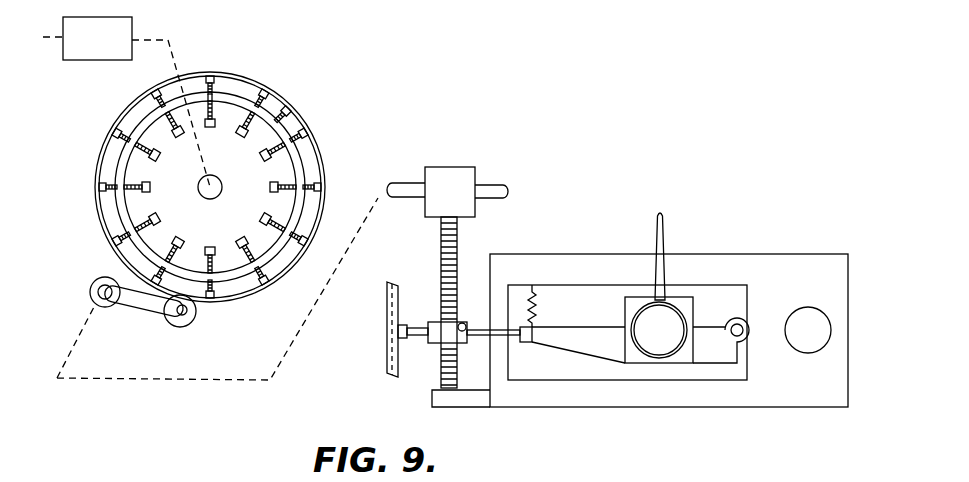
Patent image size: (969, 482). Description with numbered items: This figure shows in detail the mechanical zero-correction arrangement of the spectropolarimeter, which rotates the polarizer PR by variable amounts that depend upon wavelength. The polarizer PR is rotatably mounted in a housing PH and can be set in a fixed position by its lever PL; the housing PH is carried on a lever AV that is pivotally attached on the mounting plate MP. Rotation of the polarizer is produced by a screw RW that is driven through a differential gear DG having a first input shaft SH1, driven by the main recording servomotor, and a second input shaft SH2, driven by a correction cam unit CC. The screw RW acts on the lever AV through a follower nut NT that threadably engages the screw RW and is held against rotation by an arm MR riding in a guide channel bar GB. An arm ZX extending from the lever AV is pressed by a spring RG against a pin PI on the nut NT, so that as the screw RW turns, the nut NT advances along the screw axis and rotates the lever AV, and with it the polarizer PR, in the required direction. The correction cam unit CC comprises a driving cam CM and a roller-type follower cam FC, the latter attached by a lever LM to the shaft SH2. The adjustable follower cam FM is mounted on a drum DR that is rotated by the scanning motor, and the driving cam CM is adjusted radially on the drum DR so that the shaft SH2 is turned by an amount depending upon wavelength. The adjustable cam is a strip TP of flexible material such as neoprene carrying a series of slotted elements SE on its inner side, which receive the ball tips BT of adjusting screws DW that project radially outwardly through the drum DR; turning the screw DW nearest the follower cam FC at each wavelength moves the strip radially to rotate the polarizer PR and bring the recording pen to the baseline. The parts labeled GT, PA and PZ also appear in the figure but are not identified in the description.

The gating circuit GT is at (126, 102).
The ball tips BT is at (210, 77).
The correction cam unit CC is at (297, 106).
The slotted elements SE is at (100, 183).
The driving cam CM is at (312, 167).
The strip TP is at (98, 201).
The adjusting screws DW is at (132, 194).
The adjustable follower cam FM is at (102, 235).
The drum DR is at (263, 258).
The lever LM is at (131, 300).
The follower cam FC is at (187, 323).
The second input shaft SH2 is at (407, 185).
The differential gear DG is at (450, 173).
The first input shaft SH1 is at (492, 190).
The screw RW is at (455, 237).
The follower nut NT is at (437, 345).
The arm MR is at (418, 322).
The guide channel bar GB is at (395, 363).
The pin PI is at (462, 325).
The arm ZX is at (480, 343).
The mounting plate MP is at (748, 260).
The spring RG is at (538, 311).
The lever AV is at (590, 345).
The housing PH is at (682, 357).
The pivot axle PA is at (657, 343).
The lever PL is at (660, 243).
The polarizer PR is at (672, 298).
The pivot zero hole PZ is at (822, 327).